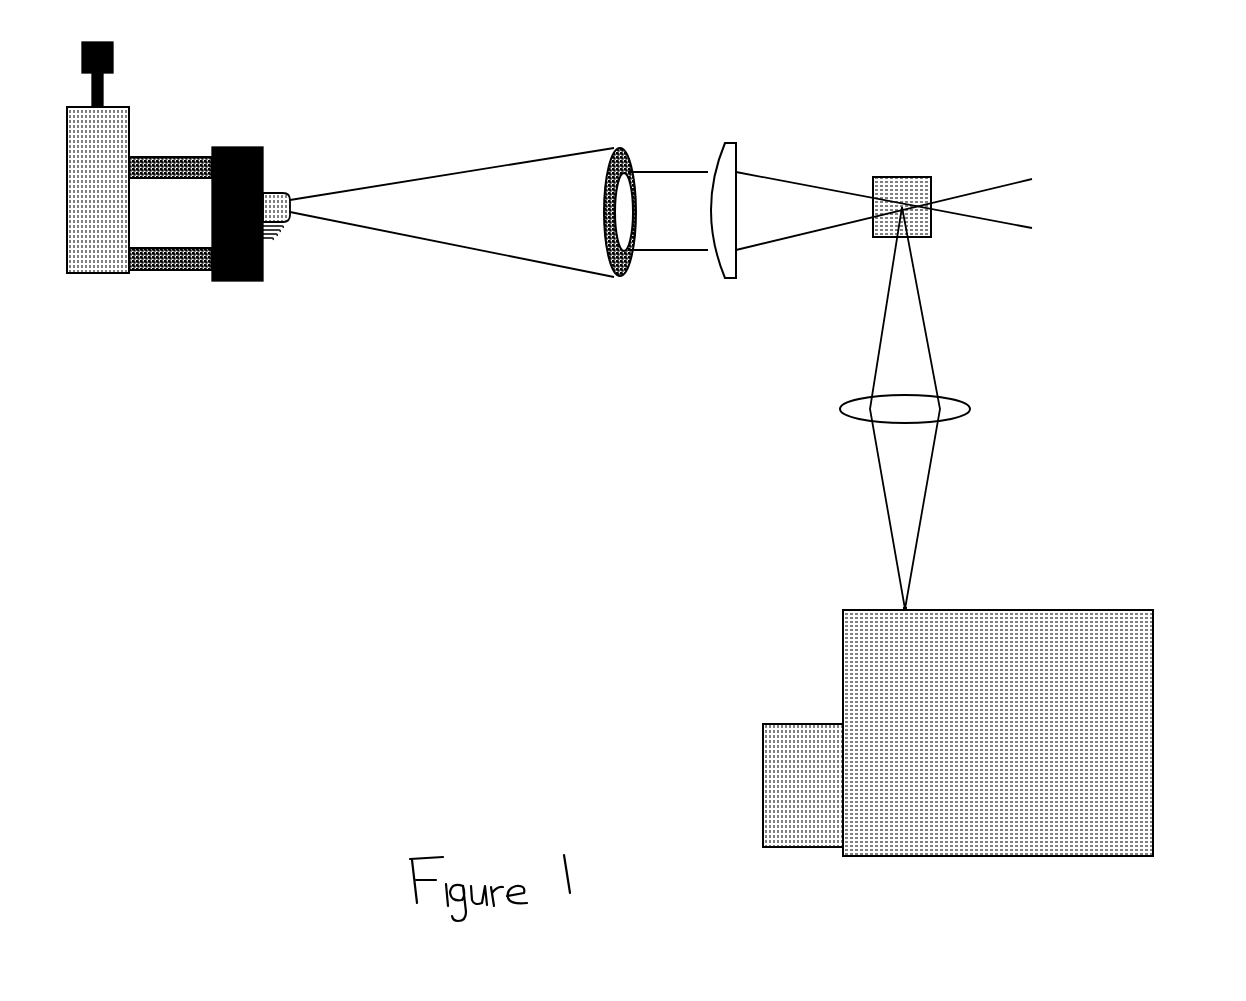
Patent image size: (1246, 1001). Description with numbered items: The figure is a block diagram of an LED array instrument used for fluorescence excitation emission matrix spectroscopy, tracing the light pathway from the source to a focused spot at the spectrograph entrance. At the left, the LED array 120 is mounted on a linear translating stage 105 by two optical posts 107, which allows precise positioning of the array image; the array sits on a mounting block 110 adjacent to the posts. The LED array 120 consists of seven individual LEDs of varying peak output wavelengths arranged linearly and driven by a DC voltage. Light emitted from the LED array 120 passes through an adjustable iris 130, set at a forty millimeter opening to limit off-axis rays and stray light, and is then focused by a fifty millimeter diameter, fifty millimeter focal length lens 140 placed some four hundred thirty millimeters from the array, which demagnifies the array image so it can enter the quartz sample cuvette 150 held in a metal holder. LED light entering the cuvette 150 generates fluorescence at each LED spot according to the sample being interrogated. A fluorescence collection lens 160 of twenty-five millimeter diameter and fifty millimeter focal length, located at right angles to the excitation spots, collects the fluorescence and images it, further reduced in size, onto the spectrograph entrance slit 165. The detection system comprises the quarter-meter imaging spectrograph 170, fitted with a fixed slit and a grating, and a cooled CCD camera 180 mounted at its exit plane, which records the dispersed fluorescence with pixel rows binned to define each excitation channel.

The linear translating stage 105 is at (99, 180).
The optical posts 107 is at (170, 195).
The mounting block 110 is at (238, 232).
The LED array 120 is at (299, 196).
The adjustable iris 130 is at (617, 193).
The lens 140 is at (731, 233).
The quartz sample cuvette 150 is at (898, 187).
The fluorescence collection lens 160 is at (938, 412).
The spectrograph entrance slit 165 is at (938, 596).
The imaging spectrograph 170 is at (1031, 733).
The CCD camera 180 is at (770, 785).